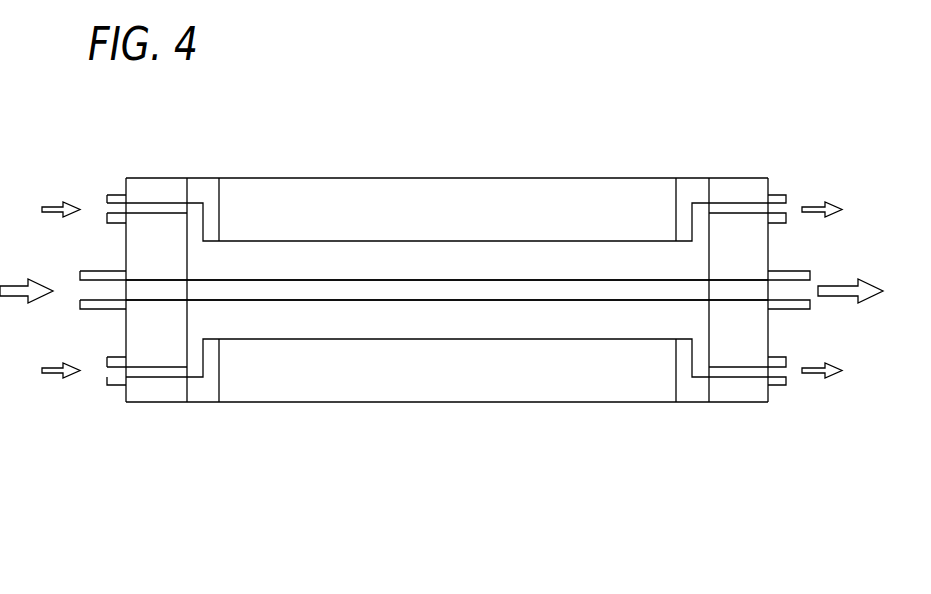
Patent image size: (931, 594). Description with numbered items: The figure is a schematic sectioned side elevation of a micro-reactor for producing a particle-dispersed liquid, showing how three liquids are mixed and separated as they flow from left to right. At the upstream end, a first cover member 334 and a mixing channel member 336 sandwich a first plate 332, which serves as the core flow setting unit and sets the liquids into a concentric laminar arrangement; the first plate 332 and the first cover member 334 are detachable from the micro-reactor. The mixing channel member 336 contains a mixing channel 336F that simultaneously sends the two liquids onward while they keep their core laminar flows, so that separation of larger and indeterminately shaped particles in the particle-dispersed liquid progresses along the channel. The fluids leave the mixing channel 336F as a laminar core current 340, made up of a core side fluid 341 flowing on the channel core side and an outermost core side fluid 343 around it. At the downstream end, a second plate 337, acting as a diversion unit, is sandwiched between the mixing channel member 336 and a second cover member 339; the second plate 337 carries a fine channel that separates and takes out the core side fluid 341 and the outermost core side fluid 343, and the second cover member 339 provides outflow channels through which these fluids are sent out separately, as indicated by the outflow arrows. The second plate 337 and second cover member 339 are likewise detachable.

The first plate 332 is at (202, 390).
The first cover member 334 is at (147, 390).
The mixing channel member 336 is at (428, 390).
The mixing channel 336F is at (316, 233).
The second plate 337 is at (700, 390).
The second cover member 339 is at (753, 390).
The laminar core current 340 is at (512, 65).
The core side fluid 341 is at (632, 298).
The outermost core side fluid 343 is at (632, 260).